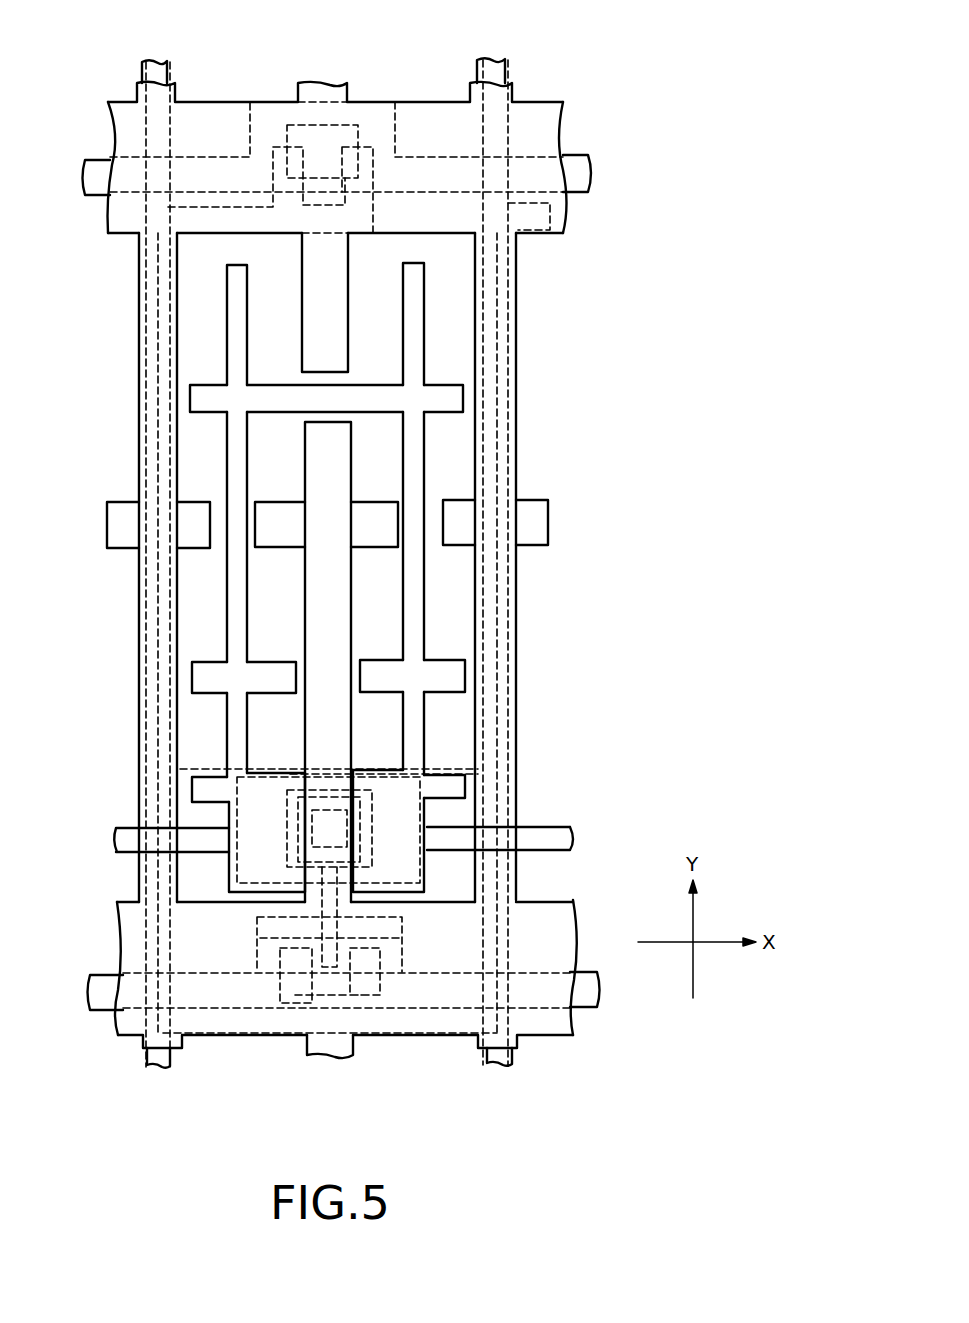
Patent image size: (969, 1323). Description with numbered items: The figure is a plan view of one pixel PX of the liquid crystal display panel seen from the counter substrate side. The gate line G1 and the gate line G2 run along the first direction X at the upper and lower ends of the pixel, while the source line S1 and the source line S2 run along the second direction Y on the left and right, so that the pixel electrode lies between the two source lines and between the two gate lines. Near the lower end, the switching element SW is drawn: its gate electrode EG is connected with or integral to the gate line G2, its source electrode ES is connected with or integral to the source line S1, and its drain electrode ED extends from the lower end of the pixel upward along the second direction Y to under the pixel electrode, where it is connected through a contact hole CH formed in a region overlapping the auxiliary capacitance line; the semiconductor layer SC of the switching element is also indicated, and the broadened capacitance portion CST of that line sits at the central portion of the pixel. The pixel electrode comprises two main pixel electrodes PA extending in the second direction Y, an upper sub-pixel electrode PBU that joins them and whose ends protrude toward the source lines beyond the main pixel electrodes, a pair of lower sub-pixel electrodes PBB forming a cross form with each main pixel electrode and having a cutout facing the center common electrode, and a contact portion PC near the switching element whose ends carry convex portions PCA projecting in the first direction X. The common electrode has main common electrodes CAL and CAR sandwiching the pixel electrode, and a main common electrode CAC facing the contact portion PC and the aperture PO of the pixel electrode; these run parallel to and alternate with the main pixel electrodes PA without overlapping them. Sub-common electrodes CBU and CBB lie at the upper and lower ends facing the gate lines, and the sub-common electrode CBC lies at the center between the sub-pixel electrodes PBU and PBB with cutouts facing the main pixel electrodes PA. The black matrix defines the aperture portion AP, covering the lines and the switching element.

The source line S1 is at (152, 60).
The source line S2 is at (488, 58).
The gate line G1 is at (590, 176).
The gate line G2 is at (598, 991).
The sub-common electrode CBU is at (413, 112).
The sub-common electrode CBB is at (437, 1036).
The main common electrode CAL is at (139, 375).
The main common electrode CAR is at (517, 610).
The main common electrode CAC is at (343, 623).
The sub-common electrode CBC is at (202, 550).
The aperture portion AP is at (177, 520).
The sub-pixel electrode PBU is at (270, 392).
The sub-pixel electrode PBB is at (454, 672).
The main pixel electrode PA is at (248, 468).
The aperture PO is at (372, 420).
The pixel PX is at (498, 394).
The convex portion PCA is at (210, 782).
The contact portion PC is at (428, 818).
The capacitance portion CST is at (272, 783).
The contact hole CH is at (333, 798).
The drain electrode ED is at (328, 950).
The gate electrode EG is at (405, 947).
The semiconductor layer SC is at (310, 940).
The source electrode ES is at (376, 1034).
The switching element SW is at (357, 1068).